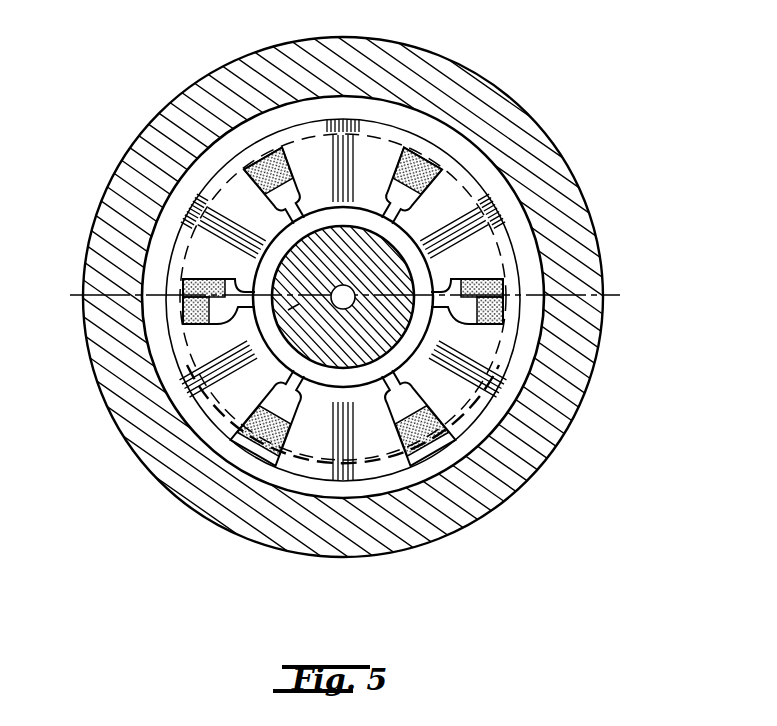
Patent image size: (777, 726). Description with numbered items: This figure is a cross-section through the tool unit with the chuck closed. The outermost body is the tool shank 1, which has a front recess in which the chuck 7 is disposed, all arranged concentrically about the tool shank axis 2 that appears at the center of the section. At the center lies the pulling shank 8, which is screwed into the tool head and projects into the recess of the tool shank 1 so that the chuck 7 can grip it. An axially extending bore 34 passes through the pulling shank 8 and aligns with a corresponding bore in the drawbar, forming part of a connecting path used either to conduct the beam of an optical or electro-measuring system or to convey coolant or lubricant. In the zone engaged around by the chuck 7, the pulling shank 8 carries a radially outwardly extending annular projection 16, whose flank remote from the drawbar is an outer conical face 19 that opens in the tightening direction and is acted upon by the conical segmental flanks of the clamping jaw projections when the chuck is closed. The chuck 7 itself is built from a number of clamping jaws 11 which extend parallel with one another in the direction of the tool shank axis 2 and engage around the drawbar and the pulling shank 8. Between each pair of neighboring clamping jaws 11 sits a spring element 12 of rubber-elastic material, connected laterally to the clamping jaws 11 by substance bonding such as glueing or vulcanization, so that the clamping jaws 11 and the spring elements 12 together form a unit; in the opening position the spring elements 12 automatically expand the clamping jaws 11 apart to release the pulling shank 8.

The tool shank 1 is at (528, 108).
The chuck 7 is at (477, 193).
The tool shank axis 2 is at (356, 318).
The pulling shank 8 is at (352, 354).
The bore 34 is at (344, 285).
The outer conical face 19 is at (275, 317).
The annular projection 16 is at (400, 381).
The spring element 12 is at (275, 170).
The clamping jaws 11 is at (367, 146).